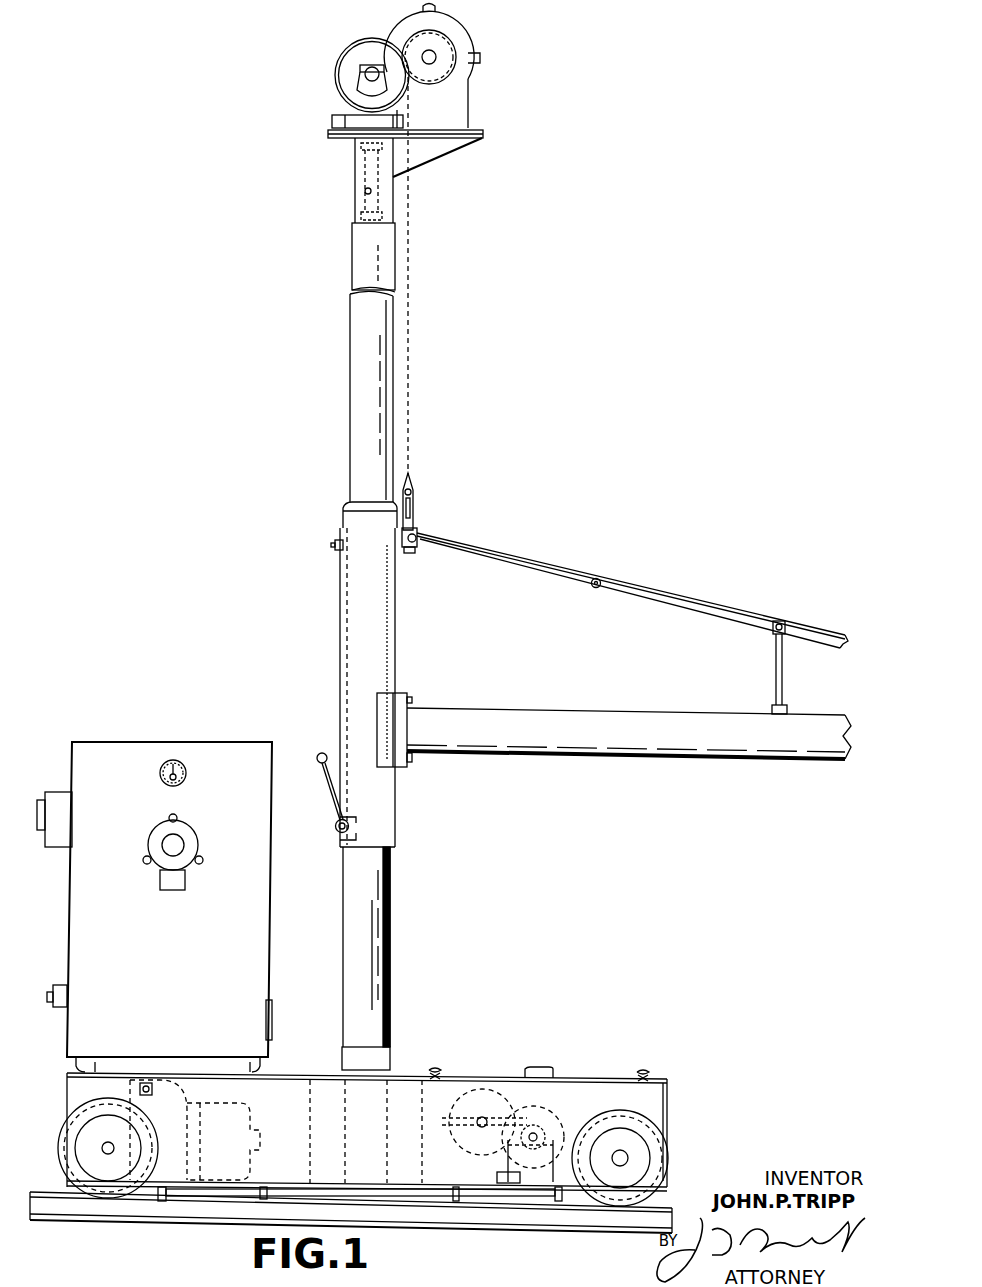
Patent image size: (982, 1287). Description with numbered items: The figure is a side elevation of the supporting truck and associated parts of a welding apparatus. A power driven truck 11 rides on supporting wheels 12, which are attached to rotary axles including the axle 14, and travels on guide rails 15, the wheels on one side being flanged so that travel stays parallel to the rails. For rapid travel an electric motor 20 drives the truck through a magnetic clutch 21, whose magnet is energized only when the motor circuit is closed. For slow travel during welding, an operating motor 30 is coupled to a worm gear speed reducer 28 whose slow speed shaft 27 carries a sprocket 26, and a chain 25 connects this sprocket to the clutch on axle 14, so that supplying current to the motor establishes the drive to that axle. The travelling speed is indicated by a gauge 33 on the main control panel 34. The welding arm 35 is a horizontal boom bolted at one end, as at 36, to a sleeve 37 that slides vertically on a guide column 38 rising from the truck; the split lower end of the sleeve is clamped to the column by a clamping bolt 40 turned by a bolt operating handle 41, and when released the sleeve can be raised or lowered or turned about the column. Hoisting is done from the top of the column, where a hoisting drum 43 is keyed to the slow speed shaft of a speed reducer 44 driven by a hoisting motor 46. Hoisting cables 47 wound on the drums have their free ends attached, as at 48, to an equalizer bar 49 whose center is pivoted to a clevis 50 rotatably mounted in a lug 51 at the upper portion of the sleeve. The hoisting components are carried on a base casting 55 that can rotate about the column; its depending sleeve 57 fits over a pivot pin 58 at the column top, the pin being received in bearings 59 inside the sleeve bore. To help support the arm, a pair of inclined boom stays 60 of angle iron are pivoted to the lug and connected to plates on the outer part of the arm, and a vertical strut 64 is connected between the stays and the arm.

The power driven truck 11 is at (400, 1097).
The supporting wheels 12 is at (650, 1110).
The rotary axle 14 is at (622, 1158).
The guide rails 15 is at (672, 1222).
The electric motor 20 is at (263, 1080).
The magnetic clutch 21 is at (173, 1080).
The chain 25 is at (553, 1118).
The sprocket 26 is at (488, 1130).
The slow speed shaft 27 is at (484, 1116).
The worm gear speed reducer 28 is at (462, 1095).
The operating motor 30 is at (547, 1102).
The gauge 33 is at (177, 765).
The main control panel 34 is at (250, 743).
The welding arm 35 is at (553, 717).
The bolted connection 36 is at (412, 700).
The sleeve 37 is at (360, 625).
The guide column 38 is at (360, 455).
The clamping bolt 40 is at (335, 827).
The bolt operating handle 41 is at (323, 781).
The hoisting drum 43 is at (453, 34).
The speed reducer 44 is at (480, 52).
The hoisting motor 46 is at (352, 57).
The hoisting cables 47 is at (410, 252).
The cable attachment 48 is at (412, 482).
The equalizer bar 49 is at (412, 498).
The clevis 50 is at (414, 518).
The lug 51 is at (400, 540).
The base casting 55 is at (442, 148).
The depending sleeve 57 is at (353, 182).
The pivot pin 58 is at (366, 193).
The bearings 59 is at (362, 145).
The boom stays 60 is at (560, 566).
The vertical struts 64 is at (775, 666).